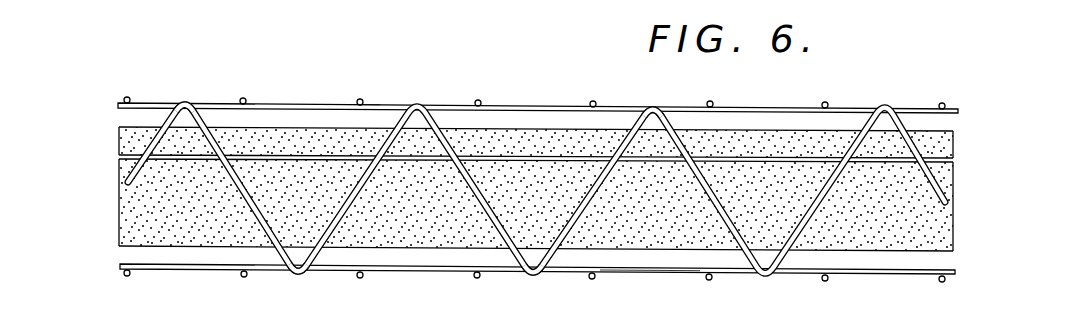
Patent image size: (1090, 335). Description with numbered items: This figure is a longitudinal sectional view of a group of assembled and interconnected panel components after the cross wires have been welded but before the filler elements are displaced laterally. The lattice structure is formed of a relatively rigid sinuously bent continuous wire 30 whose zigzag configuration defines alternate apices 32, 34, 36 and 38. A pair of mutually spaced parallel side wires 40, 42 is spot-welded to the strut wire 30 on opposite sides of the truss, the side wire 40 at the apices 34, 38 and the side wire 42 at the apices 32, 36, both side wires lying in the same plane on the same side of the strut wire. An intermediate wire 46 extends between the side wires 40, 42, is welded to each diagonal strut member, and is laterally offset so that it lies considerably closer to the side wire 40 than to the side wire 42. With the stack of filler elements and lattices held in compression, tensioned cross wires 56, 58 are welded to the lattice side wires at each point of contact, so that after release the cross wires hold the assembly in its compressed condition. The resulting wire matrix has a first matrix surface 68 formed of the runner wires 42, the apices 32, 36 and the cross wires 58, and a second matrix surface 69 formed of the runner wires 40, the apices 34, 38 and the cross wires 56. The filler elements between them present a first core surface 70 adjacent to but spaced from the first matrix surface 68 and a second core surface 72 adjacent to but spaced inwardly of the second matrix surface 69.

The sinuously bent continuous wire 30 is at (343, 212).
The apex 32 is at (298, 282).
The apex 34 is at (419, 99).
The apex 36 is at (533, 283).
The apex 38 is at (650, 103).
The side wire 40 is at (525, 108).
The side wire 42 is at (410, 274).
The intermediate wire 46 is at (400, 161).
The cross wire 56 is at (246, 99).
The cross wire 58 is at (244, 278).
The first matrix surface 68 is at (655, 291).
The second matrix surface 69 is at (361, 86).
The first core surface 70 is at (120, 248).
The second core surface 72 is at (121, 128).